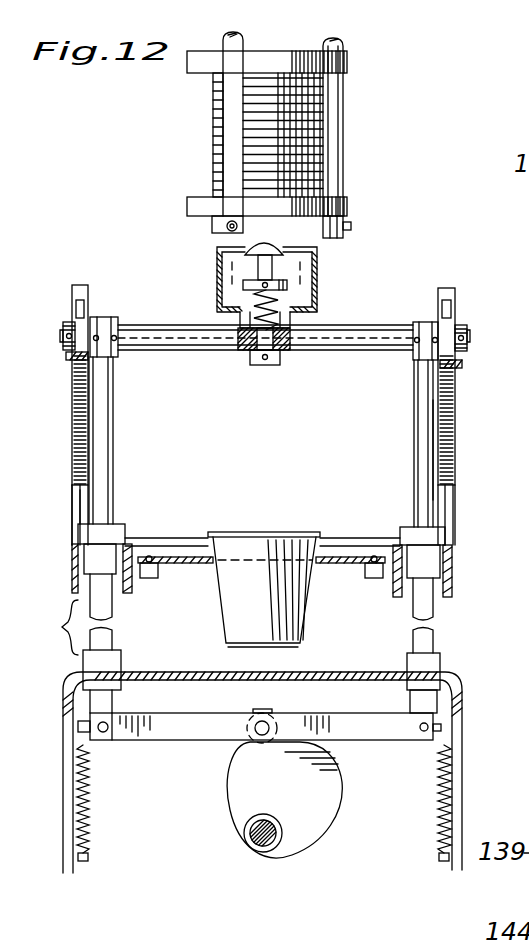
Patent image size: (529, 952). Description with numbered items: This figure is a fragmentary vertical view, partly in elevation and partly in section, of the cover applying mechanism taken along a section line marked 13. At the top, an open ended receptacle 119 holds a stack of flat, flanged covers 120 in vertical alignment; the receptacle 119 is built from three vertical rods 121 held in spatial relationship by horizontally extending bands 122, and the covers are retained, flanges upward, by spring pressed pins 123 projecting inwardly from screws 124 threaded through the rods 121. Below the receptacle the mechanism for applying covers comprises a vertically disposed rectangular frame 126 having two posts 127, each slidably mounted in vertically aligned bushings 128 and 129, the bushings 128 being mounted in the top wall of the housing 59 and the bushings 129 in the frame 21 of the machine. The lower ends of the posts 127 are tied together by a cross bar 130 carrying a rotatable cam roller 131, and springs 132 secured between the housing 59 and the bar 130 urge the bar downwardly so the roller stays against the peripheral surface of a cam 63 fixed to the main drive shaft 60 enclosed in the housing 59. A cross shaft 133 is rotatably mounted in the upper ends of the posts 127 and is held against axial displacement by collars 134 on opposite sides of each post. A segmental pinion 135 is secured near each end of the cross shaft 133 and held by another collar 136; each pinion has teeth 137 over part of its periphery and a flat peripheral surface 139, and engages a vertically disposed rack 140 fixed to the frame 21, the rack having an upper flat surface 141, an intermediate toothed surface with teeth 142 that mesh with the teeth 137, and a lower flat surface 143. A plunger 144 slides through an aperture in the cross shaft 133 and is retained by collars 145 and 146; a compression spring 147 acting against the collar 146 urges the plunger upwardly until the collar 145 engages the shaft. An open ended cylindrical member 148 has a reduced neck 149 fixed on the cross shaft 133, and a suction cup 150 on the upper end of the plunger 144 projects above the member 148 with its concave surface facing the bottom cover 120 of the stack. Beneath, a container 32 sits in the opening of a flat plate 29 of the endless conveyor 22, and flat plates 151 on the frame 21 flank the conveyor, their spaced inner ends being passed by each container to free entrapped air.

The section line 13- 13 is at (246, 15).
The frame 21 is at (72, 586).
The endless conveyor 22 is at (150, 580).
The flat plates 29 is at (334, 563).
The container 32 is at (226, 641).
The housing 59 is at (462, 701).
The main drive shaft 60 is at (250, 840).
The cam 63 is at (330, 820).
The receptacle 119 is at (347, 109).
The flanged covers 120 is at (313, 152).
The vertical rods 121 is at (233, 131).
The horizontally extending bands 122 is at (347, 63).
The spring pressed pins 123 is at (314, 228).
The screws 124 is at (225, 228).
The rectangular frame 126 is at (455, 493).
The posts 127 is at (112, 483).
The bushings 128 is at (112, 672).
The bushings 129 is at (88, 557).
The cross bar 130 is at (175, 740).
The cam roller 131 is at (268, 712).
The springs 132 is at (90, 812).
The cross shaft 133 is at (176, 348).
The collars 134 is at (118, 325).
The segmental pinion 135 is at (93, 310).
The collar 136 is at (63, 342).
The teeth 137 is at (72, 360).
The flat peripheral surface 139 is at (76, 322).
The rack 140 is at (72, 476).
The upper flat surface 141 is at (80, 290).
The teeth 142 is at (74, 410).
The lower flat surface 143 is at (78, 504).
The plunger 144 is at (240, 290).
The collar 145 is at (284, 365).
The collar 146 is at (287, 285).
The compression spring 147 is at (245, 323).
The open ended cylindrical member 148 is at (350, 230).
The reduced neck 149 is at (290, 312).
The suction cup 150 is at (300, 250).
The flat plate 151 is at (168, 538).